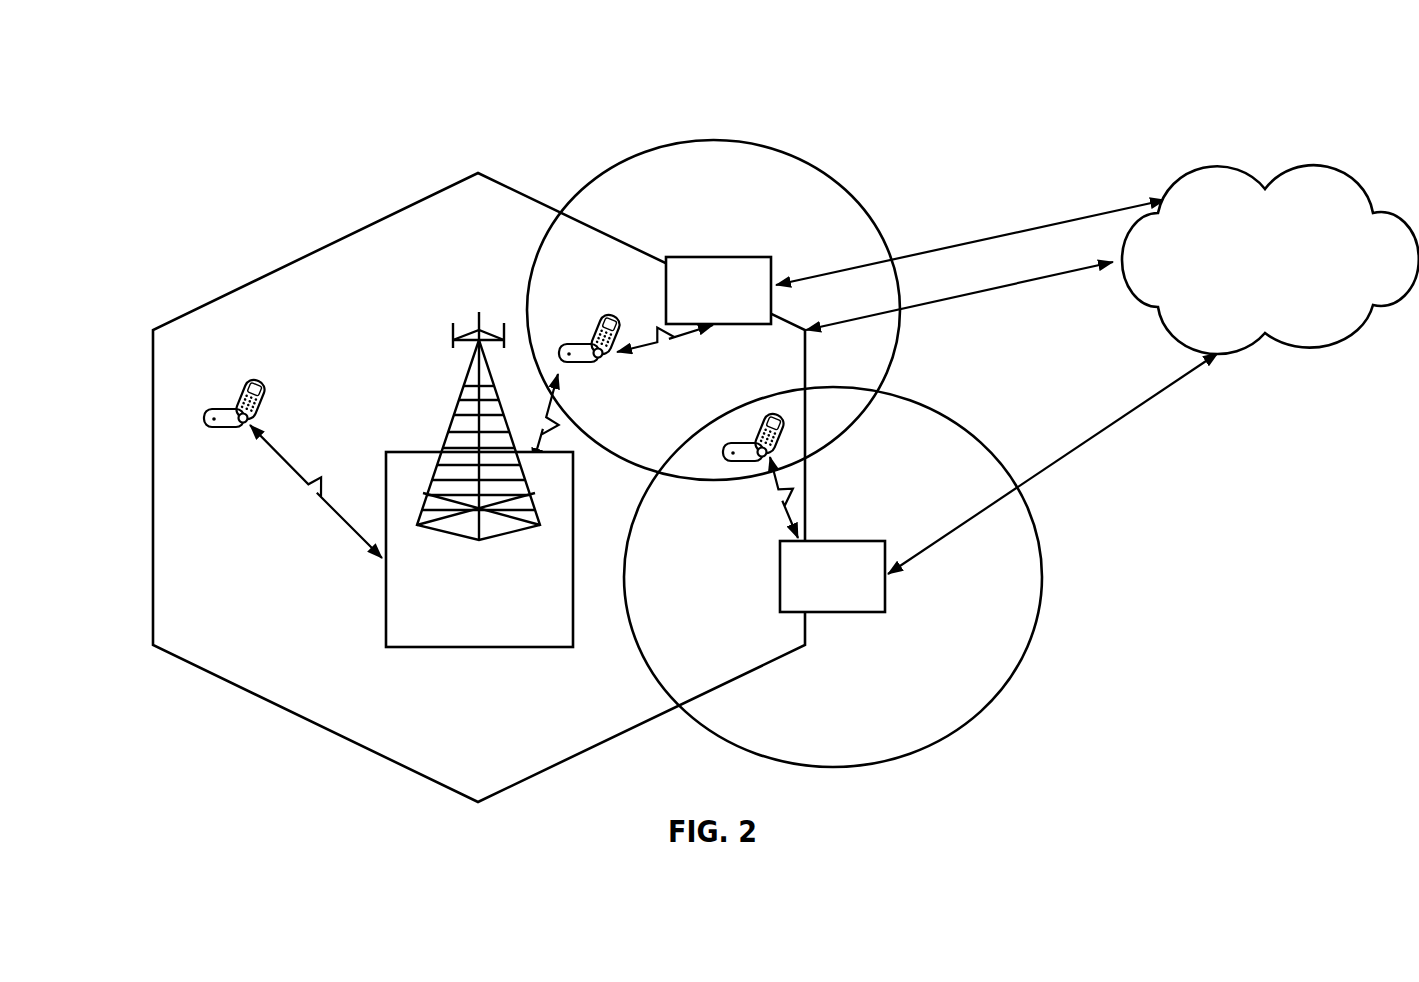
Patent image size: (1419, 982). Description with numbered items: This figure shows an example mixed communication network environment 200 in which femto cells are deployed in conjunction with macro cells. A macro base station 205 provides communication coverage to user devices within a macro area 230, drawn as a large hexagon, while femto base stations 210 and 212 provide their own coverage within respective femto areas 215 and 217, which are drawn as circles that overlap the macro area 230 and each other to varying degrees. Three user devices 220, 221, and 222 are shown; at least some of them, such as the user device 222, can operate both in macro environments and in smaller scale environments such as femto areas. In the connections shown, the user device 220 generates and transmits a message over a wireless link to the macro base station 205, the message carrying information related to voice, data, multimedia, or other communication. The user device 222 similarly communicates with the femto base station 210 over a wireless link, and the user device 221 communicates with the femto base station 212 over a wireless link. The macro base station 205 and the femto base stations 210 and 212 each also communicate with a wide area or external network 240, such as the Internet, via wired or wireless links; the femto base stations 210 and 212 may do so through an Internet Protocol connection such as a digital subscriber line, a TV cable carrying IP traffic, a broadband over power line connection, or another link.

The wireless communication system 200 is at (241, 116).
The macro base station 205 is at (405, 452).
The femto base station 210 is at (716, 257).
The femto base station 212 is at (868, 541).
The femto area 215 is at (740, 142).
The femto area 217 is at (957, 424).
The user device 220 is at (252, 379).
The user device 221 is at (768, 413).
The user device 222 is at (606, 318).
The macro area 230 is at (327, 246).
The external network 240 is at (1307, 165).